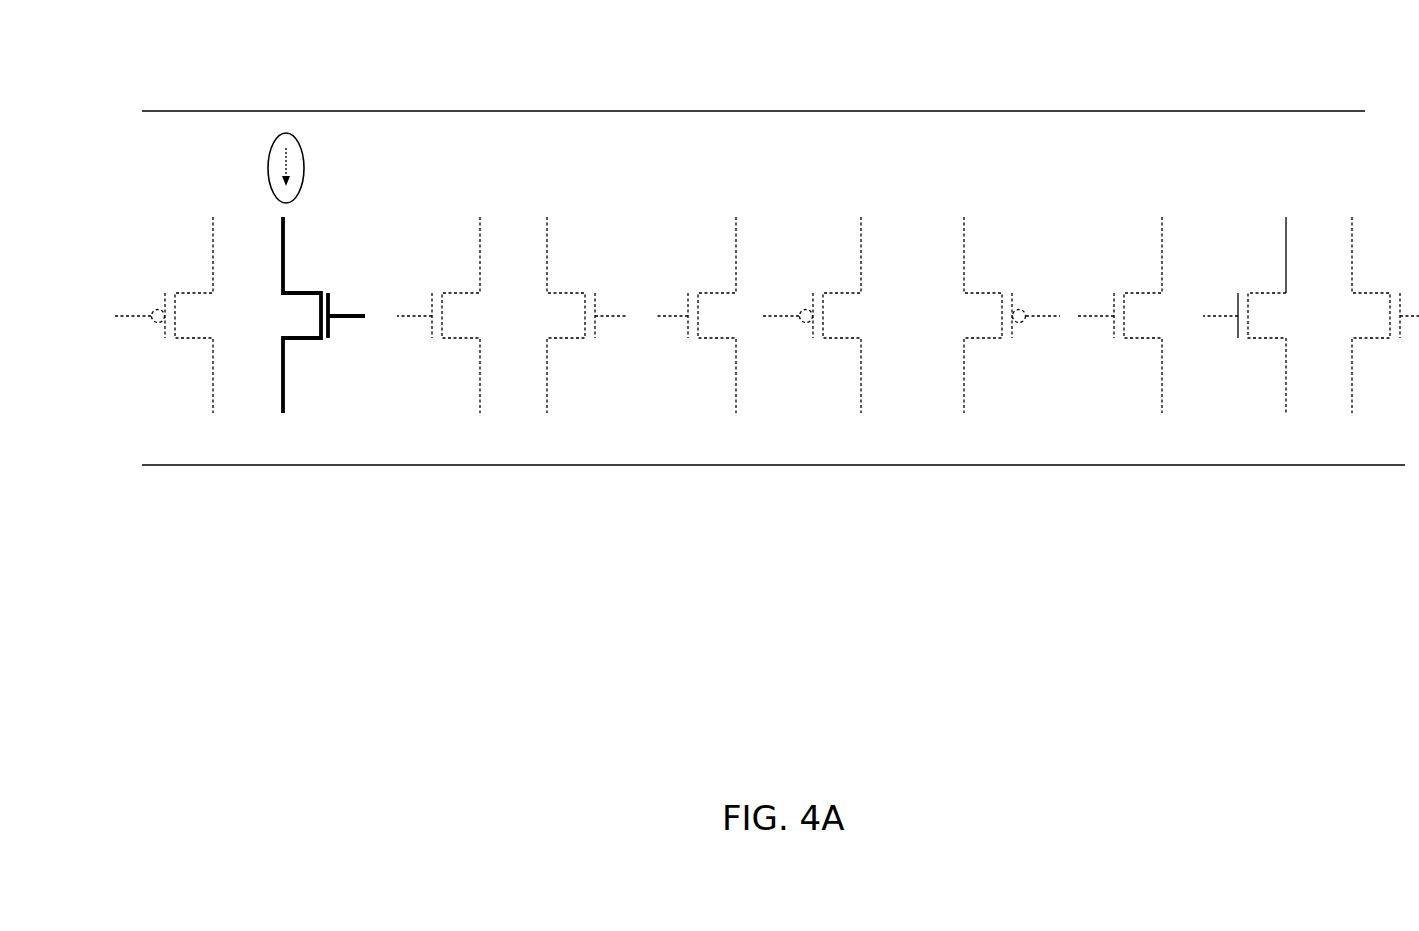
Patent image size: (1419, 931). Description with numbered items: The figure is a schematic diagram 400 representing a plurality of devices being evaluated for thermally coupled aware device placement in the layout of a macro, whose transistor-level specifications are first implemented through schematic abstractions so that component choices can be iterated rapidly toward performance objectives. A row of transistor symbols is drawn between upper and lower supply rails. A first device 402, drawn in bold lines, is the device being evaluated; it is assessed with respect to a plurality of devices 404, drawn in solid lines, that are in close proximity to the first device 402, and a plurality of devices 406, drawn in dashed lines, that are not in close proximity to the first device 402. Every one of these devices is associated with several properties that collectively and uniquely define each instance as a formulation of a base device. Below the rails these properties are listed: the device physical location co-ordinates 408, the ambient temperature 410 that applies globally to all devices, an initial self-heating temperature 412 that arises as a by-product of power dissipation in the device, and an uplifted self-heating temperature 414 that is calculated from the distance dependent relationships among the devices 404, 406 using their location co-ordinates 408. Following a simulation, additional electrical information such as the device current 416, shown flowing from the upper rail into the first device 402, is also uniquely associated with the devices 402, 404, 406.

The diagram 400 is at (1310, 65).
The first device 402 is at (316, 332).
The plurality of devices 404 is at (908, 332).
The plurality of devices 406 is at (646, 332).
The device physical location co-ordinates 408 is at (762, 514).
The ambient temperature 410 is at (765, 603).
The initial self-heating temperature 412 is at (765, 670).
The uplifted self-heating temperature 414 is at (765, 736).
The device current 416 is at (258, 160).